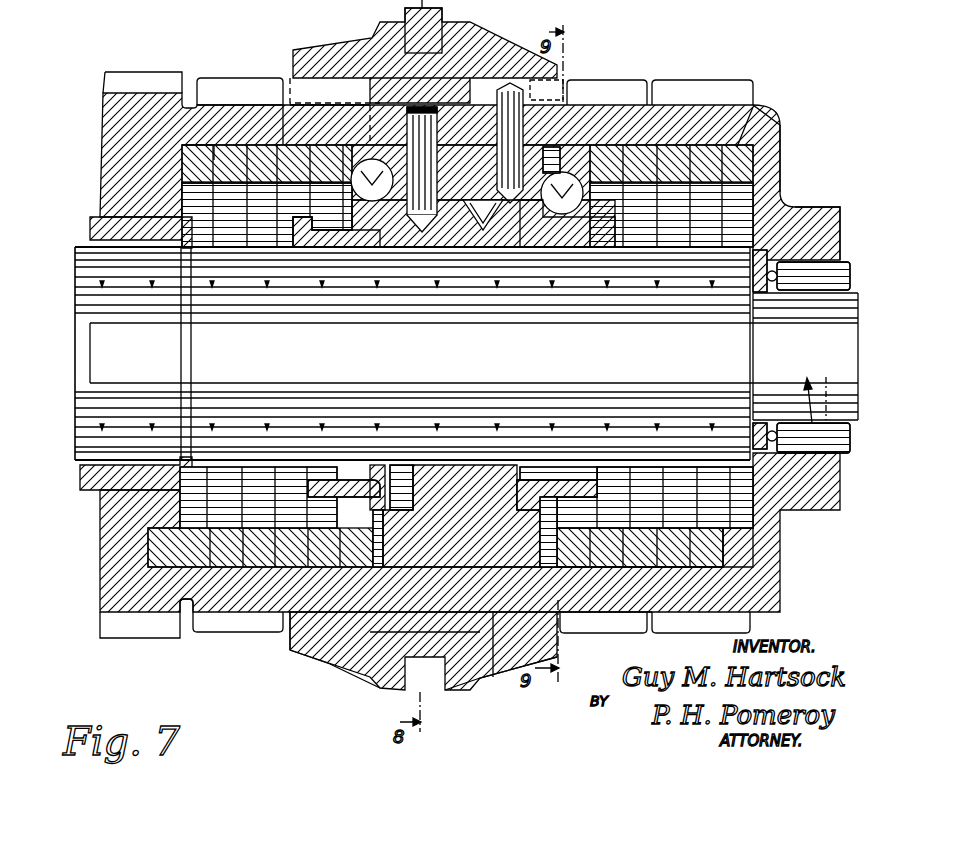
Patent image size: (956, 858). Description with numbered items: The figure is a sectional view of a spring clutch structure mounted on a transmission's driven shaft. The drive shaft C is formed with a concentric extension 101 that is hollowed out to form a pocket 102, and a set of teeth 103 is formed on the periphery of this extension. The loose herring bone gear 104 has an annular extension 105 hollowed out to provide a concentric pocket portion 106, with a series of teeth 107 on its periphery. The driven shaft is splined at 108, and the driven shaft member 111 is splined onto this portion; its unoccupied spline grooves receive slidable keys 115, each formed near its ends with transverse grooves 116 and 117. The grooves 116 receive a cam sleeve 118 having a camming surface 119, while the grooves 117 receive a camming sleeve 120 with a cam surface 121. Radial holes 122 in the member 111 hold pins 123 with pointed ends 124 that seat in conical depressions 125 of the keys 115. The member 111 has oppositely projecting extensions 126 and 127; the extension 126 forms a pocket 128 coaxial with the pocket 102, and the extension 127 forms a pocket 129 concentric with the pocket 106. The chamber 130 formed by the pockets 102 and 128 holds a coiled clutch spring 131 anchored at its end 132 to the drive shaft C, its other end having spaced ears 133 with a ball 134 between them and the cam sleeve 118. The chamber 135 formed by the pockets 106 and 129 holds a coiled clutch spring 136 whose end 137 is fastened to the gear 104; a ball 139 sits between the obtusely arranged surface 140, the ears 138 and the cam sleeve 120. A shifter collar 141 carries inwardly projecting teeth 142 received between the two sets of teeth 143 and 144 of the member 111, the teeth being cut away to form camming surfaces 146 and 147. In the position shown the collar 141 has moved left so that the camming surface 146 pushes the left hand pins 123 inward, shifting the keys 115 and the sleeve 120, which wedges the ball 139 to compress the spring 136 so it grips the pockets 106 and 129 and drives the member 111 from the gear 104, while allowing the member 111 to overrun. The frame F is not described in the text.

The concentric extension 101 is at (745, 118).
The pocket 102 is at (762, 120).
The set of teeth 103 is at (717, 90).
The loose herring bone gear 104 is at (133, 118).
The annular extension 105 is at (220, 120).
The concentric pocket portion 106 is at (200, 147).
The series of teeth 107 is at (250, 83).
The splined portion 108 is at (466, 353).
The driven shaft member 111 is at (495, 612).
The slidable keys 115 is at (515, 247).
The transverse grooves 116 is at (555, 212).
The transverse grooves 117 is at (362, 205).
The cam sleeve 118 is at (545, 480).
The camming surface 119 is at (520, 495).
The camming sleeve 120 is at (330, 487).
The cam surface 121 is at (377, 510).
The radial holes 122 is at (575, 118).
The pins 123 is at (545, 98).
The pointed ends 124 is at (500, 82).
The conical depressions 125 is at (470, 228).
The extension 126 is at (603, 108).
The extension 127 is at (302, 113).
The pocket 128 is at (610, 565).
The pocket 129 is at (327, 662).
The chamber 130 is at (740, 510).
The coiled clutch spring 131 is at (675, 568).
The end 132 is at (767, 547).
The spaced ears 133 is at (557, 147).
The ball 134 is at (590, 222).
The chamber 135 is at (198, 205).
The coiled clutch spring 136 is at (186, 618).
The end 137 is at (140, 570).
The spaced ears 138 is at (380, 22).
The ball 139 is at (333, 228).
The obtusely arranged surface 140 is at (362, 150).
The shifter collar 141 is at (493, 672).
The inwardly projecting teeth 142 is at (302, 657).
The set of teeth 143 is at (570, 620).
The set of teeth 144 is at (290, 630).
The camming surface 146 is at (360, 672).
The camming surface 147 is at (478, 675).
The frame F is at (672, 78).
The drive shaft C is at (820, 207).